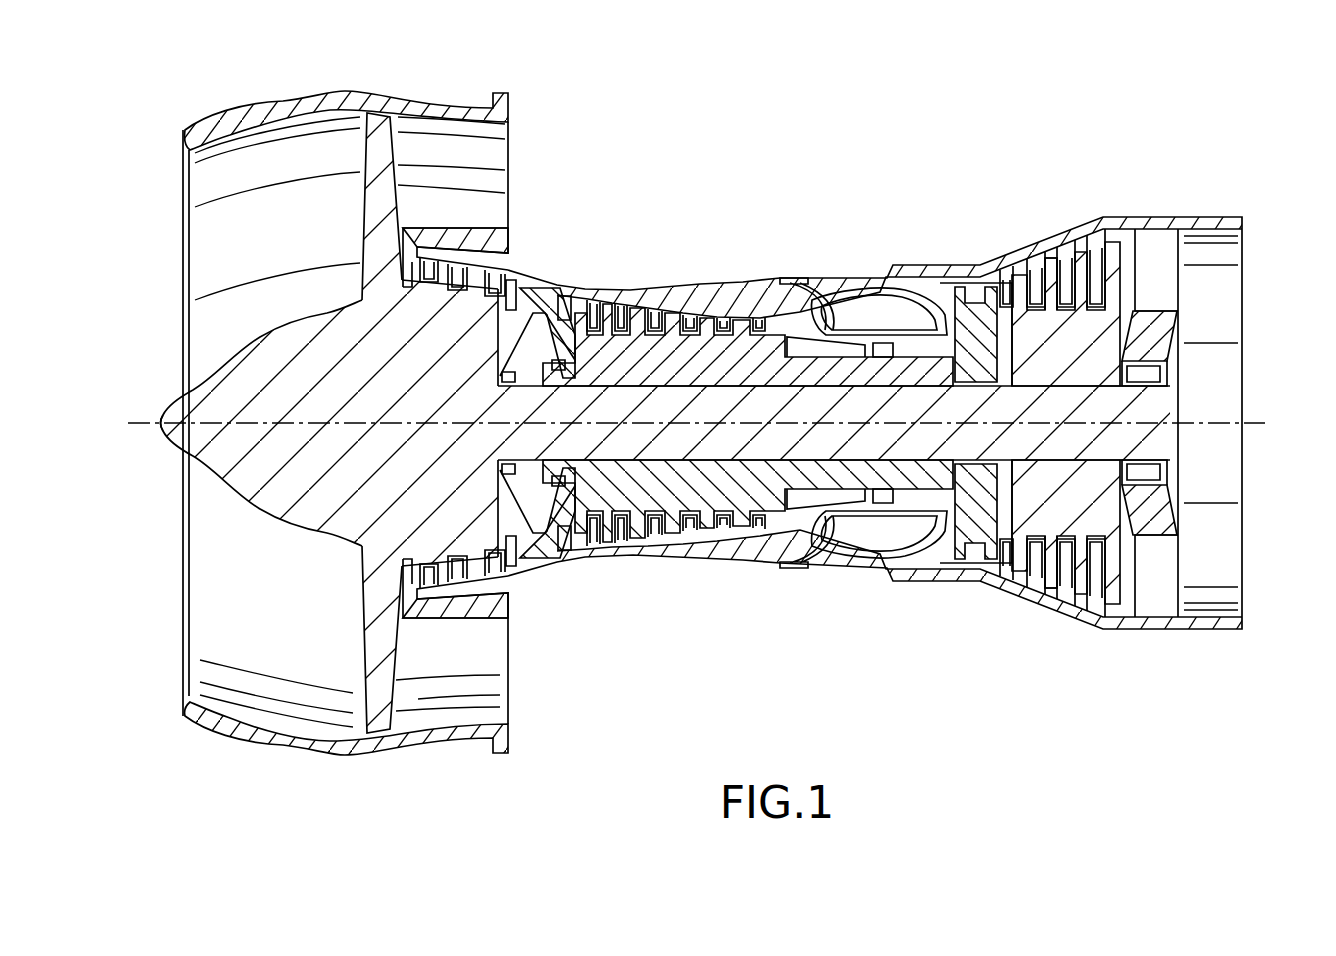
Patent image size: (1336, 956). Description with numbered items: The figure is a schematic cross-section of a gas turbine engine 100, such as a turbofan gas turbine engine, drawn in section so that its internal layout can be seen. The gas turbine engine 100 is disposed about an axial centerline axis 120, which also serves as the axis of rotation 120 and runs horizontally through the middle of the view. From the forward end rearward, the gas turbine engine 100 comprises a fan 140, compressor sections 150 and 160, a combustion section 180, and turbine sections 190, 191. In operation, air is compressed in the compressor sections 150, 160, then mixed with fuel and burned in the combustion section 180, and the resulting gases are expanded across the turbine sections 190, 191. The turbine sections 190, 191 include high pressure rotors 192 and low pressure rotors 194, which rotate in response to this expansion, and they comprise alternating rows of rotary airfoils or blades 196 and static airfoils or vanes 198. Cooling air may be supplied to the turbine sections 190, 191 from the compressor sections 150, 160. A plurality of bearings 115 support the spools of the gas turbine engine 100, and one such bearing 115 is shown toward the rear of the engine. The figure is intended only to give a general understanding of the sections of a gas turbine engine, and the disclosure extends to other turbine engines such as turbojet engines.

The gas turbine engine 100 is at (962, 146).
The bearings 115 is at (1163, 367).
The axial centerline axis 120 is at (145, 421).
The fan 140 is at (393, 163).
The compressor section 150 is at (412, 763).
The compressor section 160 is at (588, 575).
The combustion section 180 is at (807, 595).
The turbine section 190 is at (943, 645).
The turbine section 191 is at (1013, 645).
The high pressure rotors 192 is at (987, 300).
The low pressure rotors 194 is at (1110, 328).
The blades 196 is at (1050, 262).
The vanes 198 is at (1066, 246).